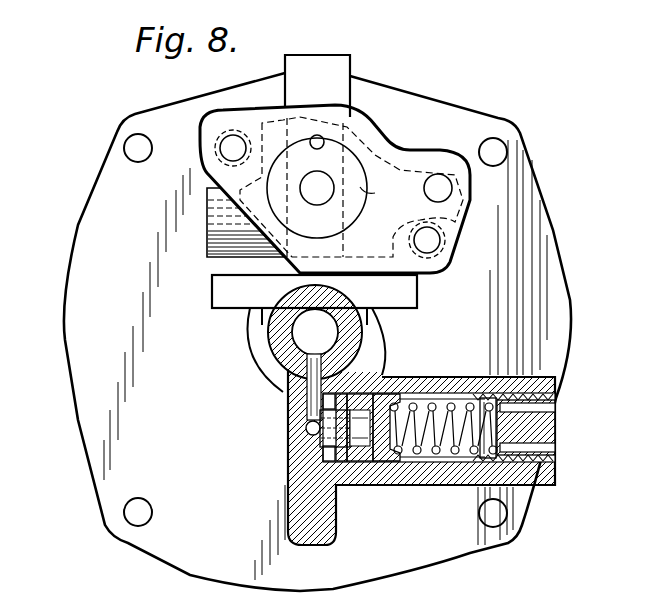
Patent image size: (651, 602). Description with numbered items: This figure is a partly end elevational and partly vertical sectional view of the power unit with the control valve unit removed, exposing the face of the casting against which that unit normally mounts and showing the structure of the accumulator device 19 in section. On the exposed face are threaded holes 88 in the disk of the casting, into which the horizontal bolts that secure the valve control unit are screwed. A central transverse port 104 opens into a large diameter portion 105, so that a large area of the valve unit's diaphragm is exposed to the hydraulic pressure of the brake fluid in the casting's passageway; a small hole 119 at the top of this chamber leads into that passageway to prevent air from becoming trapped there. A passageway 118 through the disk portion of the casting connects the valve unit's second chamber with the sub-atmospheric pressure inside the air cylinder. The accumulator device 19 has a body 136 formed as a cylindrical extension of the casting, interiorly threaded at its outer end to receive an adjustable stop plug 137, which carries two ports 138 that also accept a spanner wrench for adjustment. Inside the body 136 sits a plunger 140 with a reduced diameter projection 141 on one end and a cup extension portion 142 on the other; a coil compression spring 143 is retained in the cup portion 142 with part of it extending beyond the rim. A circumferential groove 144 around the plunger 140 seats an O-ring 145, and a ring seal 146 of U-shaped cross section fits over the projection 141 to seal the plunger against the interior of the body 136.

The accumulator device 19 is at (465, 371).
The threaded holes 88 is at (227, 147).
The central transverse port 104 is at (317, 205).
The large diameter portion 105 is at (383, 197).
The passageway 118 is at (445, 187).
The small hole 119 is at (321, 136).
The accumulator body 136 is at (518, 378).
The adjustable stop plug 137 is at (558, 397).
The ports 138 is at (555, 447).
The plunger 140 is at (390, 420).
The reduced diameter projection 141 is at (312, 439).
The cup extension portion 142 is at (435, 457).
The coil compression spring 143 is at (526, 483).
The circumferential groove 144 is at (382, 433).
The O-ring 145 is at (363, 457).
The ring seal 146 is at (345, 457).